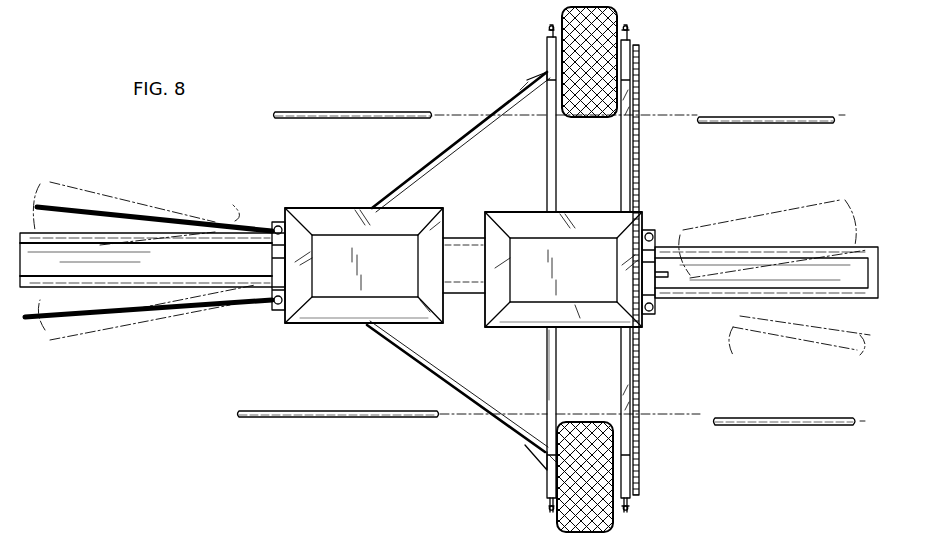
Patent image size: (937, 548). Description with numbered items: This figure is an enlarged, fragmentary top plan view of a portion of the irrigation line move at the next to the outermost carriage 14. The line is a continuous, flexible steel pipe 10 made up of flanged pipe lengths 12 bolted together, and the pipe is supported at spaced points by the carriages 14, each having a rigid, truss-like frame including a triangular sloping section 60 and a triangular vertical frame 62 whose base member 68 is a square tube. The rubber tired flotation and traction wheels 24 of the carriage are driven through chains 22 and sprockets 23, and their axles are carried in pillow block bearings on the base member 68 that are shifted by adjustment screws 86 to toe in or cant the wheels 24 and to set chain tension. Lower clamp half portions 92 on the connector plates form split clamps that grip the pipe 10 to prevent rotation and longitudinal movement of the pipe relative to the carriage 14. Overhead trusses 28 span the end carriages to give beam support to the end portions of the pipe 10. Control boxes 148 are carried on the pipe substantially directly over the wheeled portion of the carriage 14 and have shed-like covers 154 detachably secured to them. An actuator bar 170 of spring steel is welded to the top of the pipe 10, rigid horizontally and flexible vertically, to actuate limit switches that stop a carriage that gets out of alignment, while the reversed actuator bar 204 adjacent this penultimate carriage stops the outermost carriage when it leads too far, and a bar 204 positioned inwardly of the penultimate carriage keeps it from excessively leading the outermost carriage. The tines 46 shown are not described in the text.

The flexible steel pipe 10 is at (469, 240).
The flanged pipe lengths 12 is at (112, 194).
The carriage 14 is at (522, 88).
The chain 22 is at (638, 95).
The sprocket 23 is at (639, 60).
The flotation and traction wheel 24 is at (547, 50).
The overhead truss 28 is at (352, 113).
The tine 46 is at (118, 214).
The sloping section 60 is at (446, 152).
The vertical frame 62 is at (622, 165).
The base member 68 is at (553, 352).
The adjustment screw 86 is at (550, 28).
The lower clamp half portion 92 is at (278, 224).
The control box 148 is at (340, 208).
The shed-like cover 154 is at (530, 312).
The actuator bar 170 is at (710, 268).
The actuator bar 204 is at (235, 258).